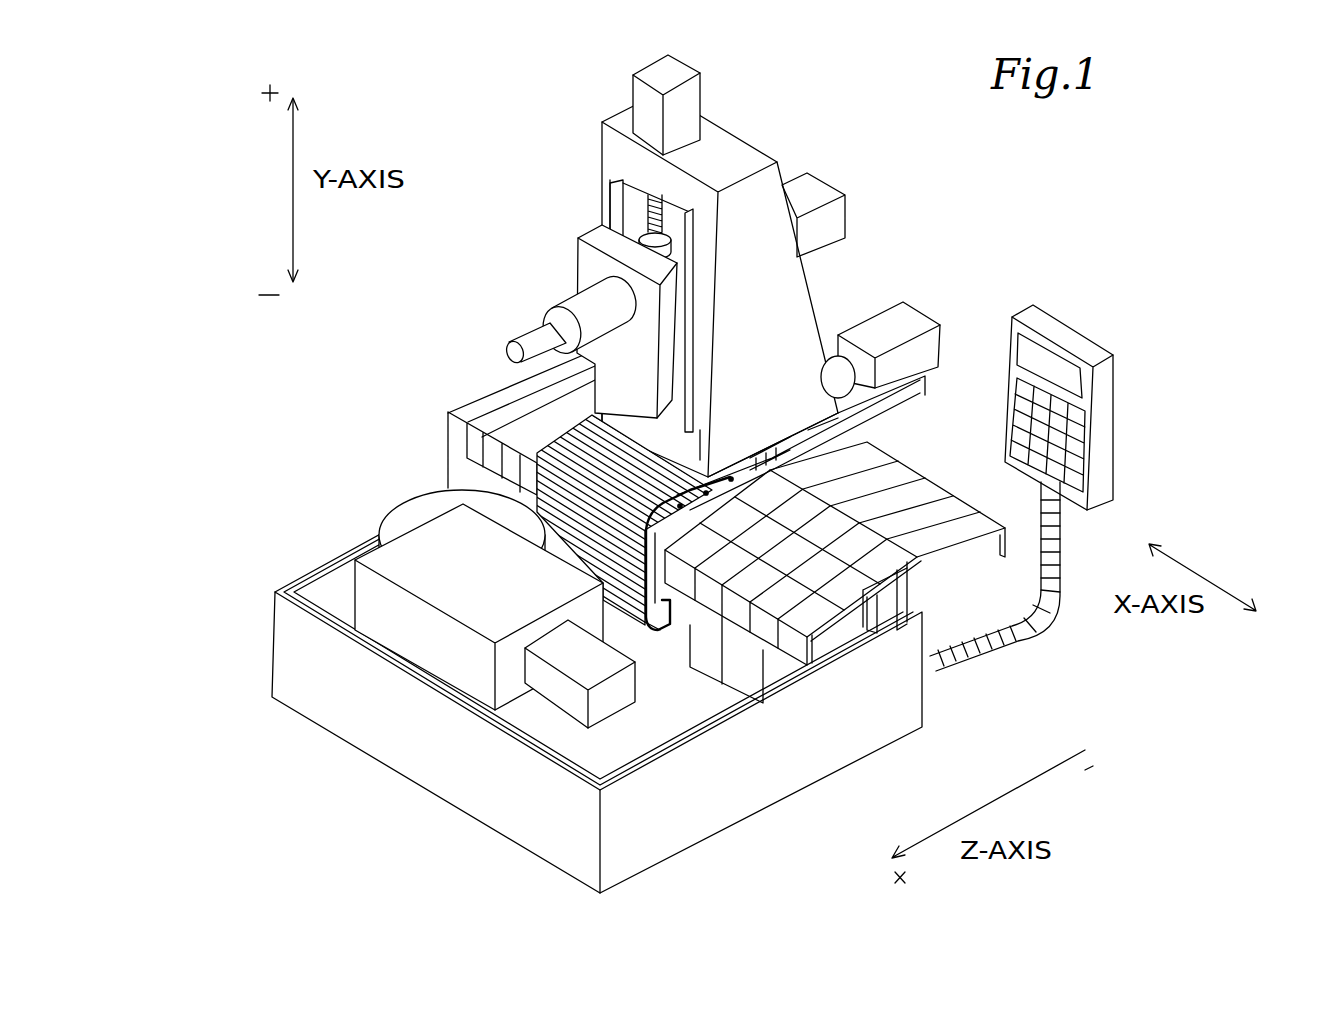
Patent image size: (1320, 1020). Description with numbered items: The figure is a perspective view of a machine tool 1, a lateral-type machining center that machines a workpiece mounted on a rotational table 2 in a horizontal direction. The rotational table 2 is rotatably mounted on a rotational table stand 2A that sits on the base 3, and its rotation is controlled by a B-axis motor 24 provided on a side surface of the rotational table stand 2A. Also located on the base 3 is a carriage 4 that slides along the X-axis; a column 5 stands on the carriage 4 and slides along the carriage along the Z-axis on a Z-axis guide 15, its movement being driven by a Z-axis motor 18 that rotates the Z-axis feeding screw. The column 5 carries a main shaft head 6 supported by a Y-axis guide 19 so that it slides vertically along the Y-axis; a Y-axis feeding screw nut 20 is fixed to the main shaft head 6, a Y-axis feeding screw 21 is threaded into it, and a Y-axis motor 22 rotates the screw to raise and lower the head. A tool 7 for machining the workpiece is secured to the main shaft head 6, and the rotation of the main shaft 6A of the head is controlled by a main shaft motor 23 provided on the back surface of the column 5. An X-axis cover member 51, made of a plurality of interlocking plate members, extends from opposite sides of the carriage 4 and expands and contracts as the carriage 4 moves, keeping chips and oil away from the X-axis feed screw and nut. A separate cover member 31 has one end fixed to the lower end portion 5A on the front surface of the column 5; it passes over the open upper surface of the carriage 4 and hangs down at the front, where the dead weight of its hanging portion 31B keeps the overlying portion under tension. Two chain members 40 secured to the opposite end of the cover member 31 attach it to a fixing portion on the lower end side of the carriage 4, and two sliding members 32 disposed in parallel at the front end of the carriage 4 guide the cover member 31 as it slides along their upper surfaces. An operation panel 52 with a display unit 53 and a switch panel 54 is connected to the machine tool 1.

The machine tool 1 is at (530, 144).
The rotational table 2 is at (402, 512).
The rotational table stand 2A is at (377, 612).
The base 3 is at (747, 800).
The carriage 4 is at (853, 430).
The column 5 is at (745, 157).
The lower end portion 5A is at (688, 452).
The main shaft head 6 is at (562, 266).
The main shaft 6A is at (572, 300).
The tool 7 is at (520, 345).
The Z-axis guide 15 is at (870, 402).
The Z-axis motor 18 is at (903, 325).
The Y-axis guide 19 is at (608, 210).
The Y-axis feeding screw nut 20 is at (662, 240).
The Y-axis feeding screw 21 is at (648, 197).
The Y-axis motor 22 is at (690, 92).
The main shaft motor 23 is at (822, 190).
The B-axis motor 24 is at (560, 697).
The cover member 31 is at (540, 458).
The hanging portion 31B is at (675, 637).
The sliding members 32 is at (830, 613).
The chain members 40 is at (735, 637).
The X-axis cover member 51 is at (490, 398).
The operation panel 52 is at (1103, 383).
The display unit 53 is at (1063, 378).
The switch panel 54 is at (1073, 482).